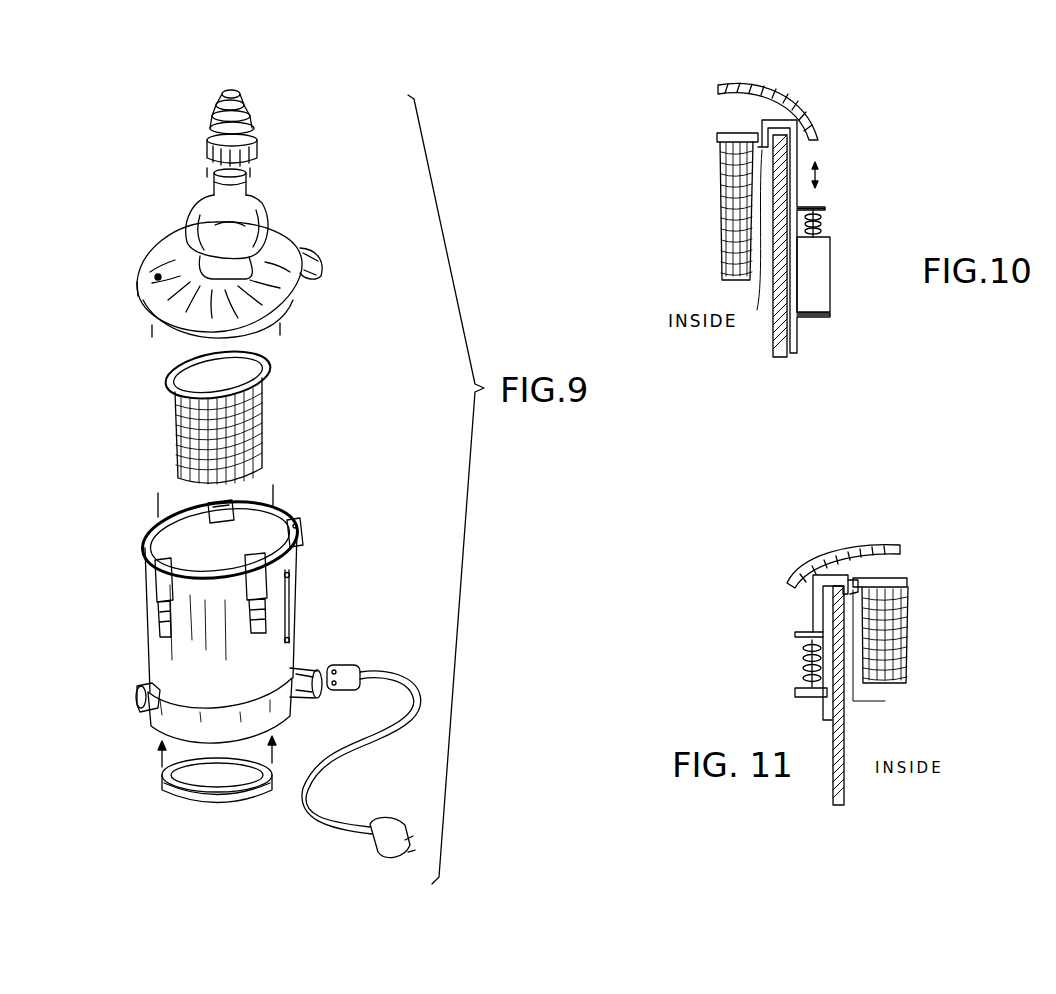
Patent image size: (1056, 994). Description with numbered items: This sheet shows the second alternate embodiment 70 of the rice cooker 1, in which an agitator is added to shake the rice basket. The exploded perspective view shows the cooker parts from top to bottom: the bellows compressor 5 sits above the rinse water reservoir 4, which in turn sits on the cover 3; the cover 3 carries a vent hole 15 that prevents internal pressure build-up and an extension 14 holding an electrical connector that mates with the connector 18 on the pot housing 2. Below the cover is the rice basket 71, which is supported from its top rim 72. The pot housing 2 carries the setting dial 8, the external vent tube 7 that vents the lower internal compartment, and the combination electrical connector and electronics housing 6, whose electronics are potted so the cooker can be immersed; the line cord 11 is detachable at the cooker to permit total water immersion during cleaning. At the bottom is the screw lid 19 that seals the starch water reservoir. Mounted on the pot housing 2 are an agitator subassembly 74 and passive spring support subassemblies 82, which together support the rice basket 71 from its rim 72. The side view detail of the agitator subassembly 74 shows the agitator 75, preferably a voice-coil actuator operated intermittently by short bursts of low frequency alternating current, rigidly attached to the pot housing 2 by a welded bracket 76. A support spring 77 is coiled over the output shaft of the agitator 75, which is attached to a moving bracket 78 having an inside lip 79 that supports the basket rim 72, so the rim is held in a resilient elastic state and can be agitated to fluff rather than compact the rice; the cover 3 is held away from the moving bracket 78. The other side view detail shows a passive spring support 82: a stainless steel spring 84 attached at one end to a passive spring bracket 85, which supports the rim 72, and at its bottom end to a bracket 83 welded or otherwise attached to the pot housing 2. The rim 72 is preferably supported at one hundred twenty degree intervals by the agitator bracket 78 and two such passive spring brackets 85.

In FIG. 9, the rice cooker 1 is at (316, 212).
In FIG. 9, the pot housing 2 is at (247, 604).
In FIG. 10, the pot housing 2 is at (772, 357).
In FIG. 11, the pot housing 2 is at (828, 782).
In FIG. 9, the cover 3 is at (233, 277).
In FIG. 10, the cover 3 is at (772, 74).
In FIG. 11, the cover 3 is at (842, 542).
In FIG. 9, the rinse water reservoir 4 is at (204, 204).
In FIG. 9, the bellows compressor 5 is at (214, 113).
In FIG. 9, the combination electrical connector and electronics housing 6 is at (302, 678).
In FIG. 9, the external vent tube 7 is at (289, 561).
In FIG. 9, the setting dial 8 is at (138, 690).
In FIG. 9, the line cord 11 is at (383, 745).
In FIG. 9, the cover extension 14 is at (320, 255).
In FIG. 9, the vent hole 15 is at (155, 275).
In FIG. 9, the connector 18 is at (303, 532).
In FIG. 9, the screw lid 19 is at (186, 810).
In FIG. 9, the embodiment 70 is at (350, 343).
In FIG. 9, the rice basket 71 is at (270, 430).
In FIG. 10, the rice basket 71 is at (718, 194).
In FIG. 11, the rice basket 71 is at (910, 628).
In FIG. 9, the top rim 72 is at (166, 374).
In FIG. 10, the top rim 72 is at (722, 135).
In FIG. 11, the top rim 72 is at (912, 580).
In FIG. 9, the agitator subassembly 74 is at (290, 598).
In FIG. 10, the agitator subassembly 74 is at (850, 236).
In FIG. 10, the agitator 75 is at (829, 278).
In FIG. 10, the welded bracket 76 is at (805, 320).
In FIG. 10, the support spring 77 is at (830, 220).
In FIG. 10, the bracket 78 is at (818, 200).
In FIG. 10, the inside lip 79 is at (757, 310).
In FIG. 11, the inside lip 79 is at (885, 701).
In FIG. 9, the passive spring support subassembly 82 is at (147, 573).
In FIG. 11, the passive spring support subassembly 82 is at (754, 654).
In FIG. 11, the bracket 83 is at (810, 700).
In FIG. 11, the stainless steel spring 84 is at (796, 660).
In FIG. 11, the passive spring bracket 85 is at (812, 604).